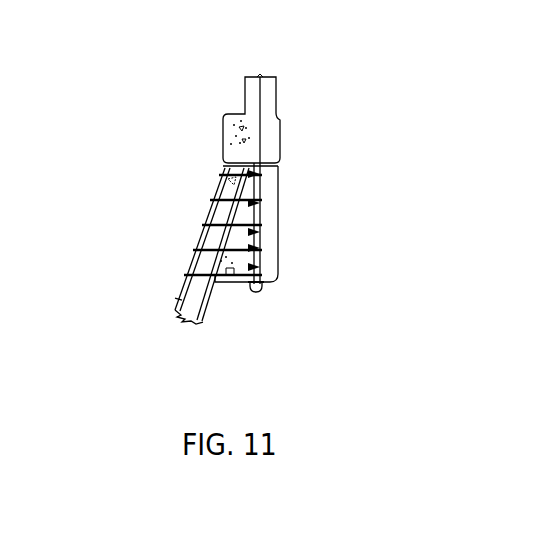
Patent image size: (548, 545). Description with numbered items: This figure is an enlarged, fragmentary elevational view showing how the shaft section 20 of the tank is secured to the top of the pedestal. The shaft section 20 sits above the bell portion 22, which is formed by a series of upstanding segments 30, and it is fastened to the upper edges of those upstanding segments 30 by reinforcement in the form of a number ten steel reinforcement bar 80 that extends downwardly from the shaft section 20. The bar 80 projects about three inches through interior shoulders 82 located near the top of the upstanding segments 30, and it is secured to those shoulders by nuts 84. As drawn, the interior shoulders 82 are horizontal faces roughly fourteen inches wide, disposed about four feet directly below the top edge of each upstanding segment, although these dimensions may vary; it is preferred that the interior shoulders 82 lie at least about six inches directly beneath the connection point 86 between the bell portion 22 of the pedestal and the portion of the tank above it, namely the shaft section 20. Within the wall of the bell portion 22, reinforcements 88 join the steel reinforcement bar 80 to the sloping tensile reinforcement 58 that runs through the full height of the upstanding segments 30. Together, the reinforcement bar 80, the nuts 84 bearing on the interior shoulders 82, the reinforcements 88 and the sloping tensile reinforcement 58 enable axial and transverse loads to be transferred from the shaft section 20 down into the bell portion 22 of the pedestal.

The shaft section 20 is at (233, 91).
The connection point 86 is at (270, 149).
The steel reinforcement bar 80 is at (275, 168).
The bell portion 22 is at (179, 244).
The upstanding segments 30 is at (225, 219).
The reinforcements 88 is at (258, 184).
The sloping tensile reinforcement 58 is at (182, 294).
The interior shoulders 82 is at (283, 290).
The nuts 84 is at (272, 296).